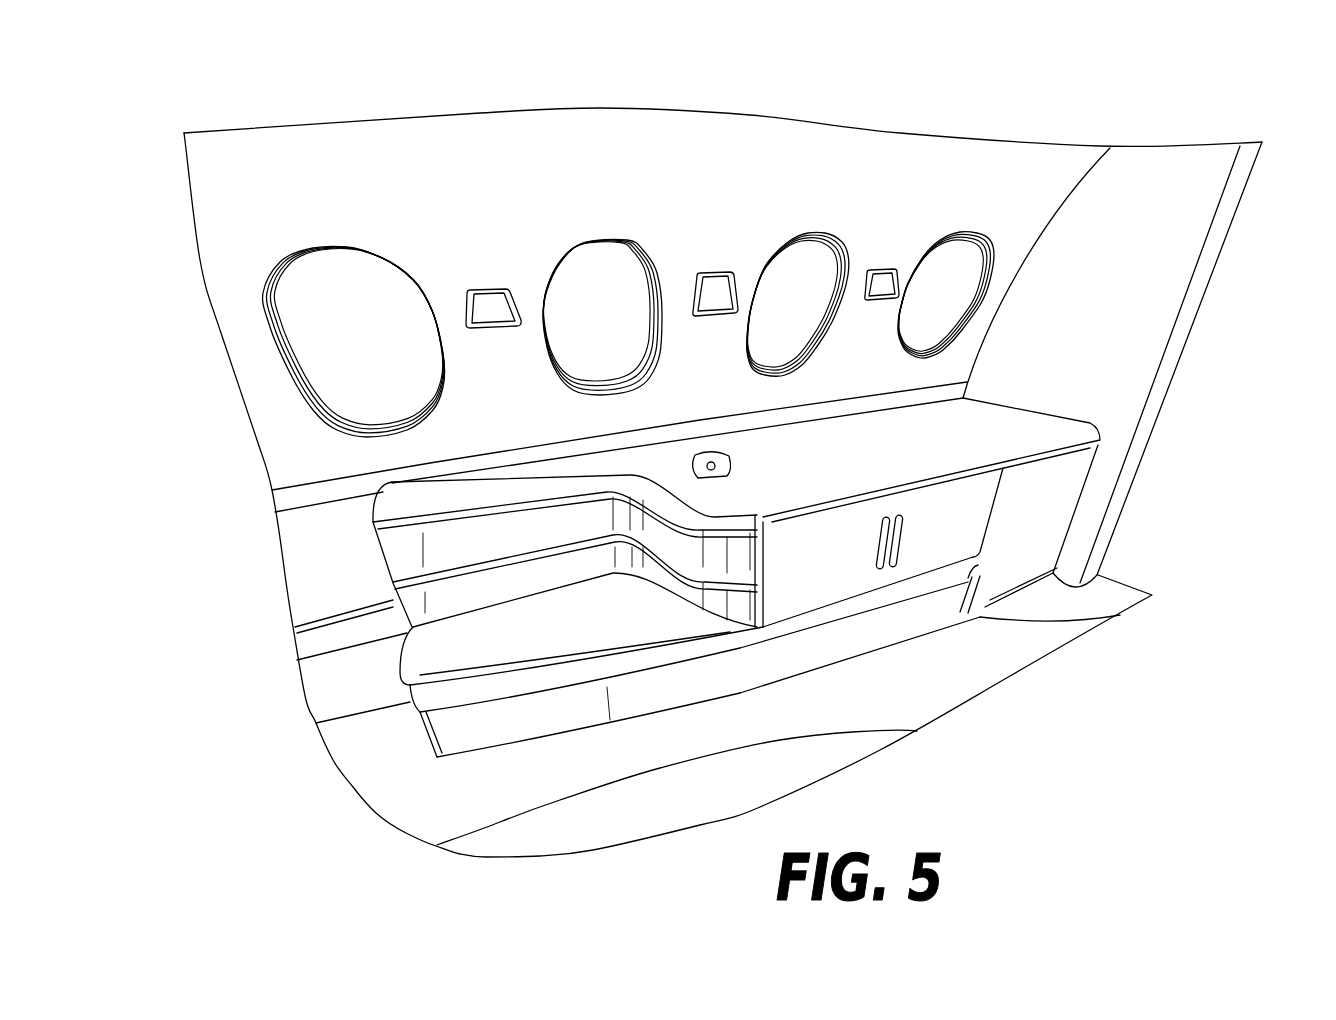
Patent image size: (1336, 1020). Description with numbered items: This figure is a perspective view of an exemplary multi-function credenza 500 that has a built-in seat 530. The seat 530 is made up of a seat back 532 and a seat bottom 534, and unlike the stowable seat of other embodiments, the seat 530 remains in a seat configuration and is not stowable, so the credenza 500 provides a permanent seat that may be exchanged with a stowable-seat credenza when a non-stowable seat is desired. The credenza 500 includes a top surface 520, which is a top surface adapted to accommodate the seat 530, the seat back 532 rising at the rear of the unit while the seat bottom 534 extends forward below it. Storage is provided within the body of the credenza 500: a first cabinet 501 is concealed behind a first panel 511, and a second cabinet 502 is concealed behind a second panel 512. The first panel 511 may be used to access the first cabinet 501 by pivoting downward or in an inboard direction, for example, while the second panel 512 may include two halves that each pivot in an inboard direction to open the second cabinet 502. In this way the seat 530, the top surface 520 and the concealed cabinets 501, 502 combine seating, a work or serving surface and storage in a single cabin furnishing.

The multi-function credenza 500 is at (248, 100).
The first cabinet 501 is at (1060, 463).
The second cabinet 502 is at (813, 578).
The first panel 511 is at (1028, 522).
The second panel 512 is at (910, 543).
The top surface 520 is at (833, 452).
The seat 530 is at (513, 440).
The seat back 532 is at (572, 518).
The seat bottom 534 is at (530, 647).